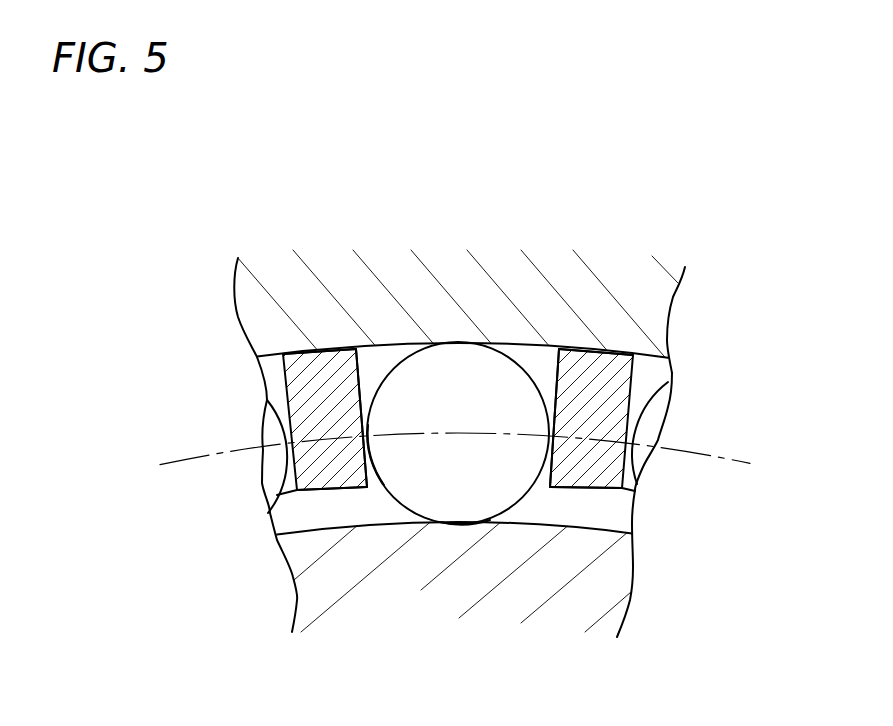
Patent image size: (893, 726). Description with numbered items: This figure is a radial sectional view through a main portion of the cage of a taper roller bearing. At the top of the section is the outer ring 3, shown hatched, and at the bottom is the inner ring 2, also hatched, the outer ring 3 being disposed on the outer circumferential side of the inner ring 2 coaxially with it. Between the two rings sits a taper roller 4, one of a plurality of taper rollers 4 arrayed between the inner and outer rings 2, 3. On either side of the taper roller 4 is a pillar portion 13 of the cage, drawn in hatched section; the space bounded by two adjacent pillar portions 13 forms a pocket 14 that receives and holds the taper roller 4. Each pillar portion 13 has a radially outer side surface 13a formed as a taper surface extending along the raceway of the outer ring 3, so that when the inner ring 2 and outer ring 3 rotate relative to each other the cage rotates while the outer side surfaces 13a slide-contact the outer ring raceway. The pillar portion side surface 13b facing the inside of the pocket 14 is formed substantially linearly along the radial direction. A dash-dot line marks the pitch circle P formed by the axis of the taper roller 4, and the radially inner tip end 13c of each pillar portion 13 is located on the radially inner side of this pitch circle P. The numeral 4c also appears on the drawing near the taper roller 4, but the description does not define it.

The inner ring 2 is at (577, 580).
The outer ring 3 is at (654, 280).
The taper roller 4 is at (462, 488).
The ball surface contact portion 4c is at (518, 497).
The pillar portion 13 is at (334, 380).
The radially outer side surface 13a is at (623, 353).
The pillar portion side surface 13b is at (362, 382).
The radially inner tip end 13c is at (330, 487).
The pocket 14 is at (376, 466).
The pitch circle P is at (215, 450).